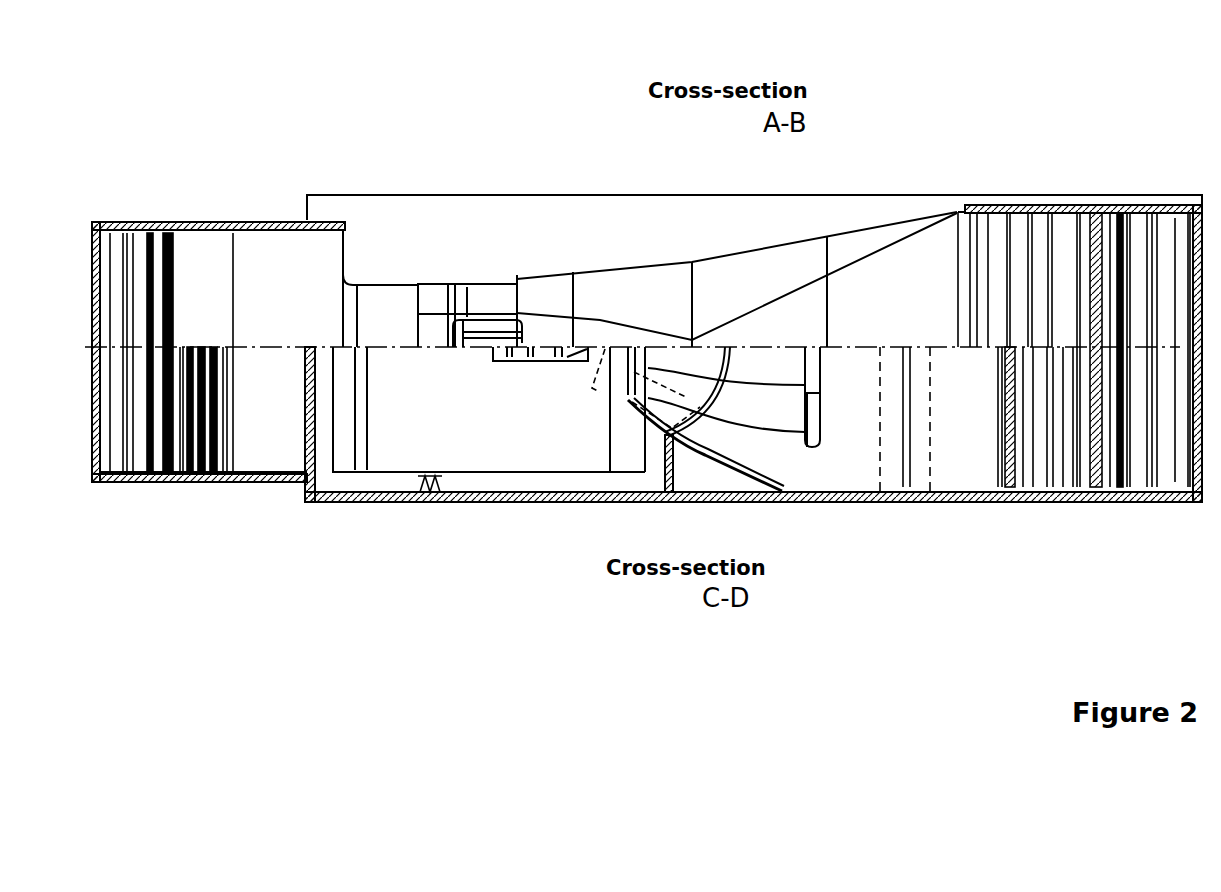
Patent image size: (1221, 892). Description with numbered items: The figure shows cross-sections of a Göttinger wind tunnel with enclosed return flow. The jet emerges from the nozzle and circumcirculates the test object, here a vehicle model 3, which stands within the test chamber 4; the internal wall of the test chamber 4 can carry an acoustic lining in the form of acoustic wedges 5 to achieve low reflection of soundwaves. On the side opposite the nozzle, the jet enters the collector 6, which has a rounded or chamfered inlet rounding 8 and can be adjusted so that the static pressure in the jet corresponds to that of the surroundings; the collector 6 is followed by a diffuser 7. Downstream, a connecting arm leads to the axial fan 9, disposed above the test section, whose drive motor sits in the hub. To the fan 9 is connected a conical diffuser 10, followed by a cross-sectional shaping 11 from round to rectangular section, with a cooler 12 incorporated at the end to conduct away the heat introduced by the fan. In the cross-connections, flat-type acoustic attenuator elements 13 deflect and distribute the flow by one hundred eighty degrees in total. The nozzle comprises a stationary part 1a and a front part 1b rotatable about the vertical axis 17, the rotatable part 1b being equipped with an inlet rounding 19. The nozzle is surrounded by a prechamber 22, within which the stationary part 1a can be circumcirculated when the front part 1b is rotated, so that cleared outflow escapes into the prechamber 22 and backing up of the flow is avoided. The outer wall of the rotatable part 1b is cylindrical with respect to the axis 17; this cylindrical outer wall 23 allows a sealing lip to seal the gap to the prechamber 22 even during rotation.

The stationary nozzle part 1a is at (770, 433).
The rotatable nozzle front part 1b is at (634, 398).
The vehicle model 3 is at (541, 361).
The test chamber 4 is at (497, 415).
The acoustic wedges 5 is at (433, 480).
The collector 6 is at (363, 480).
The diffuser 7 is at (268, 418).
The inlet rounding 8 is at (826, 440).
The fan 9 is at (433, 292).
The conical diffuser 10 is at (652, 295).
The cross-sectional shaping 11 is at (798, 305).
The cooler 12 is at (965, 300).
The flat-type acoustic attenuator elements 13 is at (150, 222).
The vertical axis 17 is at (627, 395).
The inlet rounding 19 is at (703, 350).
The nozzle prechamber 22 is at (809, 450).
The cylindrical outer wall 23 is at (617, 388).